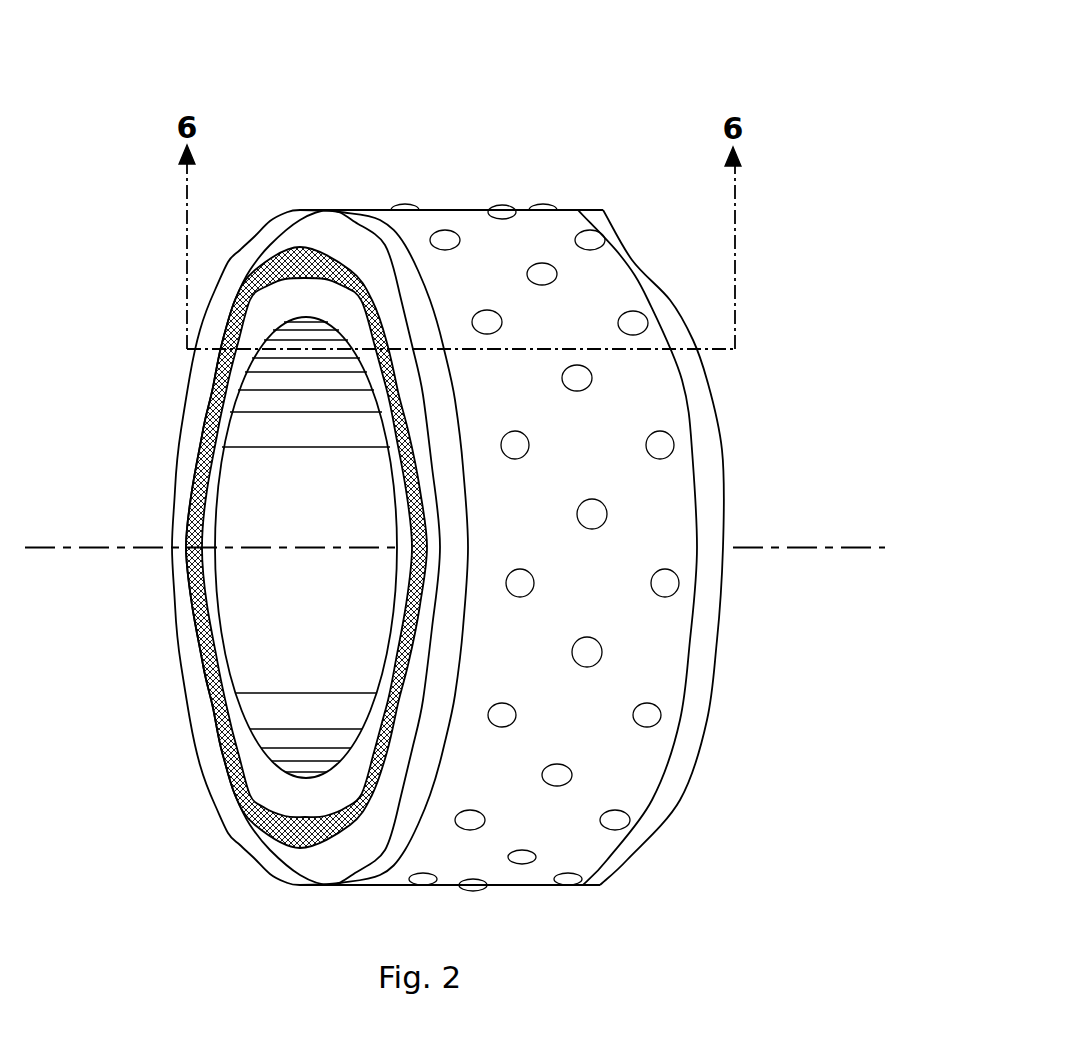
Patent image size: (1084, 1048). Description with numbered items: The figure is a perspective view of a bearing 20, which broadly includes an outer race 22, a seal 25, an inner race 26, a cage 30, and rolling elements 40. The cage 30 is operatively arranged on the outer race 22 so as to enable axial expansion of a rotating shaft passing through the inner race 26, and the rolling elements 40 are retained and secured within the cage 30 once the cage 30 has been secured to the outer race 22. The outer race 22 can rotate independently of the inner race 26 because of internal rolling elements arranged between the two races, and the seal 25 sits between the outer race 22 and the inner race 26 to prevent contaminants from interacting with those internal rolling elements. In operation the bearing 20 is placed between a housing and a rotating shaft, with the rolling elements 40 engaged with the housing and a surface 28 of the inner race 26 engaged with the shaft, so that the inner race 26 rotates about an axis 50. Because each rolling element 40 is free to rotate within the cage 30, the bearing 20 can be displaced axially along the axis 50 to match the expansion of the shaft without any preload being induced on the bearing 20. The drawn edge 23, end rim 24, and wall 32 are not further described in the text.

The bearing 20 is at (741, 56).
The outer race 22 is at (260, 240).
The rim edge 23 is at (330, 207).
The second end rim 24 is at (652, 825).
The seal 25 is at (208, 383).
The inner race 26 is at (297, 793).
The surface 28 is at (258, 660).
The cage 30 is at (667, 508).
The cylindrical wall 32 is at (647, 665).
The rolling elements 40 is at (502, 318).
The axis 50 is at (55, 548).